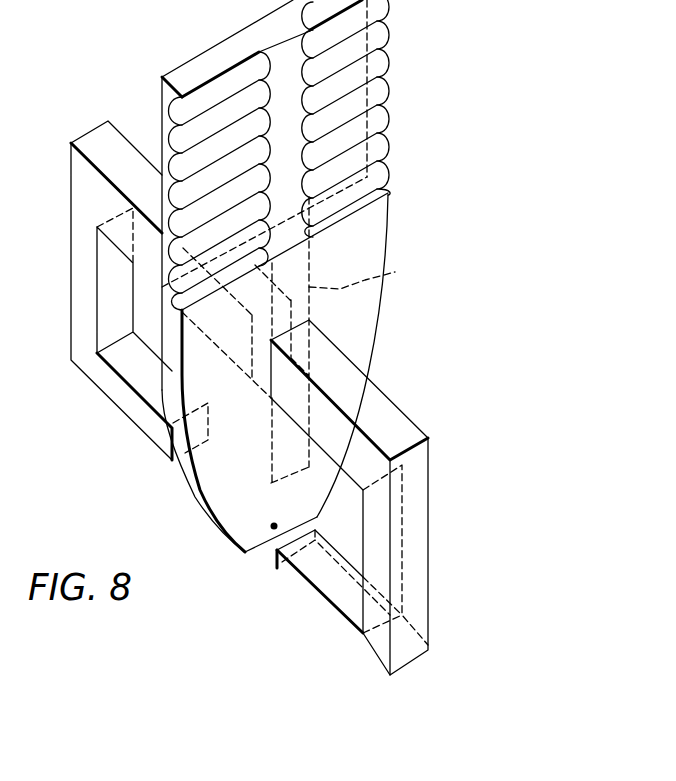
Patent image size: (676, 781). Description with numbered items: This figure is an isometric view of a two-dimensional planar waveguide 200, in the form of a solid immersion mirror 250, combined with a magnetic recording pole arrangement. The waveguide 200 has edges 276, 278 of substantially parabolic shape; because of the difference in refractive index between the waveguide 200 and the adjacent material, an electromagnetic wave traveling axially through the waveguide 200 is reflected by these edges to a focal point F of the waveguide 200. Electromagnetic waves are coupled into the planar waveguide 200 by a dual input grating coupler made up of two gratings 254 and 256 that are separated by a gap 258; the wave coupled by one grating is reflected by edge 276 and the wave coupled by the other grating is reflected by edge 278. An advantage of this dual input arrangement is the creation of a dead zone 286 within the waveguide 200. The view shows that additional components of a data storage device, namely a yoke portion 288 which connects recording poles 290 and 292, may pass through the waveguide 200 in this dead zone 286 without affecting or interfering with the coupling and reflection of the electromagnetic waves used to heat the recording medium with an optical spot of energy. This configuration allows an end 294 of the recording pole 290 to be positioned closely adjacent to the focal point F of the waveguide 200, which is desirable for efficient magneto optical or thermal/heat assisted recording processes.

The two-dimensional planar waveguide 200 is at (418, 56).
The solid immersion mirror 250 is at (384, 323).
The grating 254 is at (163, 123).
The grating 256 is at (390, 80).
The gap 258 is at (301, 156).
The edge 276 is at (181, 486).
The edge 278 is at (370, 355).
The dead zone 286 is at (395, 272).
The yoke portion 288 is at (405, 416).
The recording pole 290 is at (327, 615).
The recording pole 292 is at (134, 424).
The end of the recording pole 294 is at (277, 552).
The focal point F is at (274, 522).